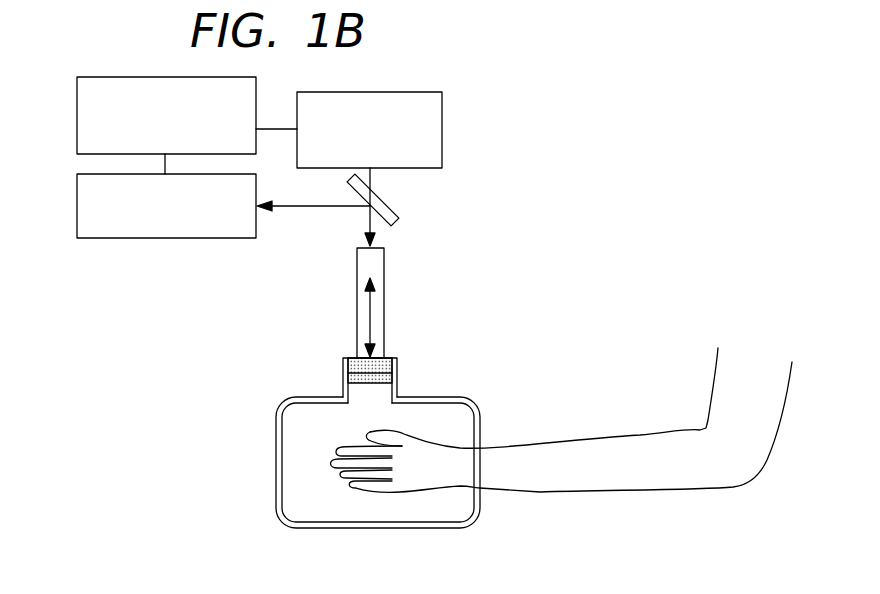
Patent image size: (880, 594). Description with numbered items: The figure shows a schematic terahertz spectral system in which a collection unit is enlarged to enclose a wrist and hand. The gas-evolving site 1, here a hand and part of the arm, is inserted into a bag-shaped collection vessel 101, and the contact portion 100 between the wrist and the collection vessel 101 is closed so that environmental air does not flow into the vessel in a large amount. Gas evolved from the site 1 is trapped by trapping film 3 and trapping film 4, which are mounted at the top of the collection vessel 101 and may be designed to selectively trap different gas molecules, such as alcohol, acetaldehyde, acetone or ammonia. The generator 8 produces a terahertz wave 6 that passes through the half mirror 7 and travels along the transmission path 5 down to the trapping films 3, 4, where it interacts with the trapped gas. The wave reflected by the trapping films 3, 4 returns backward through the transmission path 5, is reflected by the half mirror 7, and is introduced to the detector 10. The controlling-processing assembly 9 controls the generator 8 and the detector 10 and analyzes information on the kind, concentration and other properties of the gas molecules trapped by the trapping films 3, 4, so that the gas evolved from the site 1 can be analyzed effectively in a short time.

The gas-evolving site 1 is at (413, 484).
The trapping film 3 is at (347, 375).
The trapping film 4 is at (350, 358).
The transmission path 5 is at (384, 333).
The terahertz wave 6 is at (372, 300).
The half mirror 7 is at (394, 207).
The generator 8 is at (442, 128).
The controlling-processing assembly 9 is at (77, 100).
The detector 10 is at (77, 196).
The contact portion 100 is at (410, 464).
The collection vessel 101 is at (482, 417).